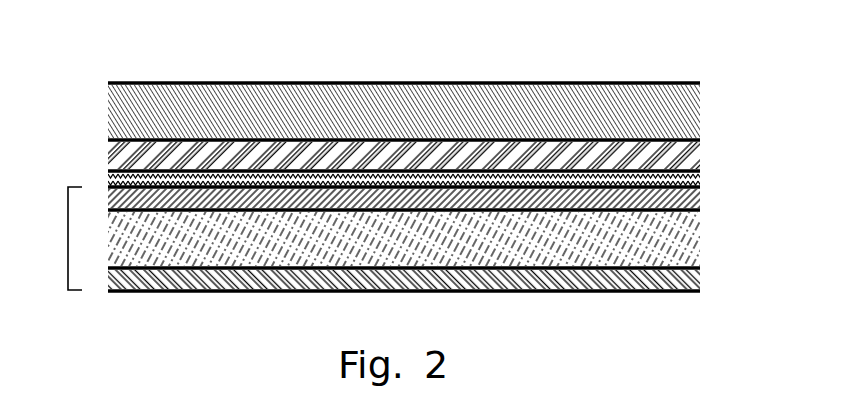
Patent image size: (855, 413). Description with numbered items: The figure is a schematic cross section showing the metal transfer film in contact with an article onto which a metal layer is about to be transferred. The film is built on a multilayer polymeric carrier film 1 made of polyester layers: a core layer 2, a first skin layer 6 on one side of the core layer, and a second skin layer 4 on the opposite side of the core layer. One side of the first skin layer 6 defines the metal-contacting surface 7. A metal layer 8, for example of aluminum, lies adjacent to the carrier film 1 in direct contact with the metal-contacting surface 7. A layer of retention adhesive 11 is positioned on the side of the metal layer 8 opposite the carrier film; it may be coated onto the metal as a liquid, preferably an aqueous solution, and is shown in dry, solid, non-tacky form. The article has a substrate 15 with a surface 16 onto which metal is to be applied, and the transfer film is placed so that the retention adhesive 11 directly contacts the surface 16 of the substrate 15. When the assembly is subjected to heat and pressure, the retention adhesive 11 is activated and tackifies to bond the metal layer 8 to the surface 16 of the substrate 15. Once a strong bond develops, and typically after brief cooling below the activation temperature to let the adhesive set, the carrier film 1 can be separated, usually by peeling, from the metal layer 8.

The multilayer polymeric carrier film 1 is at (66, 221).
The core layer 2 is at (697, 246).
The second skin layer 4 is at (703, 274).
The first skin layer 6 is at (698, 197).
The metal-contacting surface 7 is at (110, 92).
The metal layer 8 is at (700, 178).
The retention adhesive layer 11 is at (614, 148).
The substrate 15 is at (700, 130).
The surface 16 is at (170, 182).